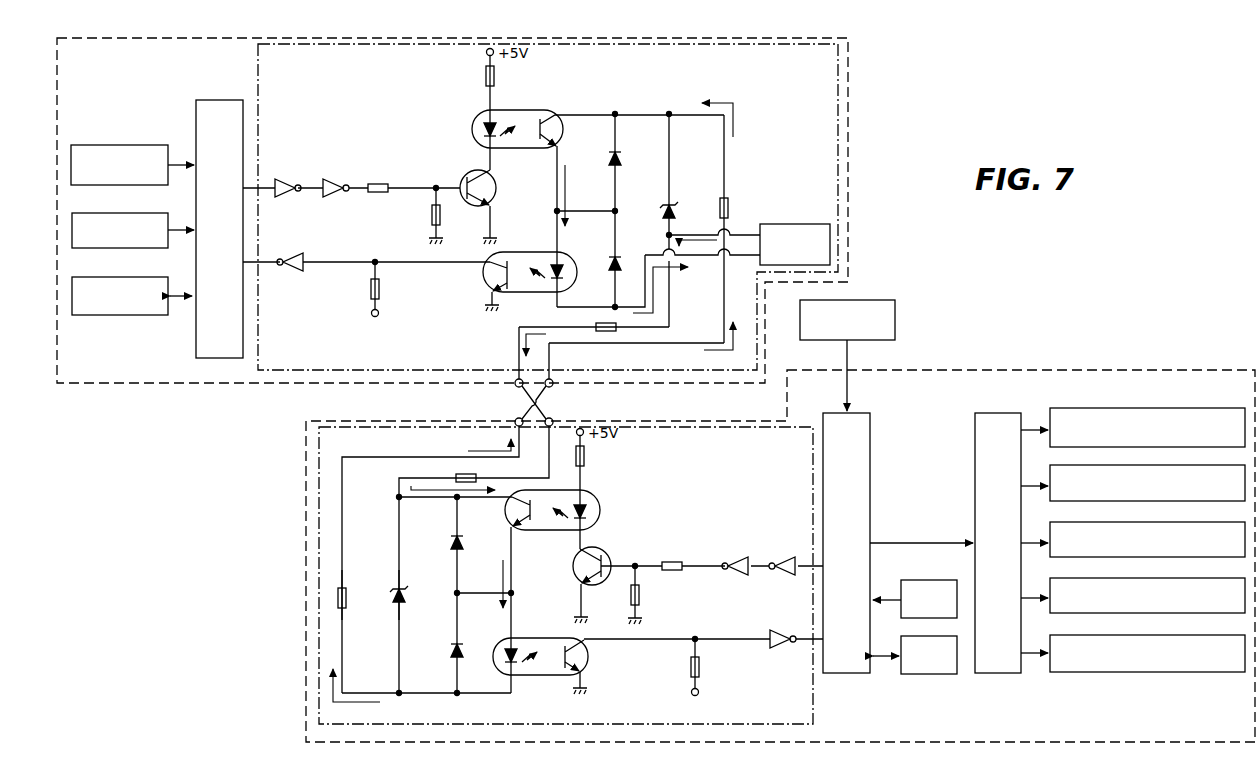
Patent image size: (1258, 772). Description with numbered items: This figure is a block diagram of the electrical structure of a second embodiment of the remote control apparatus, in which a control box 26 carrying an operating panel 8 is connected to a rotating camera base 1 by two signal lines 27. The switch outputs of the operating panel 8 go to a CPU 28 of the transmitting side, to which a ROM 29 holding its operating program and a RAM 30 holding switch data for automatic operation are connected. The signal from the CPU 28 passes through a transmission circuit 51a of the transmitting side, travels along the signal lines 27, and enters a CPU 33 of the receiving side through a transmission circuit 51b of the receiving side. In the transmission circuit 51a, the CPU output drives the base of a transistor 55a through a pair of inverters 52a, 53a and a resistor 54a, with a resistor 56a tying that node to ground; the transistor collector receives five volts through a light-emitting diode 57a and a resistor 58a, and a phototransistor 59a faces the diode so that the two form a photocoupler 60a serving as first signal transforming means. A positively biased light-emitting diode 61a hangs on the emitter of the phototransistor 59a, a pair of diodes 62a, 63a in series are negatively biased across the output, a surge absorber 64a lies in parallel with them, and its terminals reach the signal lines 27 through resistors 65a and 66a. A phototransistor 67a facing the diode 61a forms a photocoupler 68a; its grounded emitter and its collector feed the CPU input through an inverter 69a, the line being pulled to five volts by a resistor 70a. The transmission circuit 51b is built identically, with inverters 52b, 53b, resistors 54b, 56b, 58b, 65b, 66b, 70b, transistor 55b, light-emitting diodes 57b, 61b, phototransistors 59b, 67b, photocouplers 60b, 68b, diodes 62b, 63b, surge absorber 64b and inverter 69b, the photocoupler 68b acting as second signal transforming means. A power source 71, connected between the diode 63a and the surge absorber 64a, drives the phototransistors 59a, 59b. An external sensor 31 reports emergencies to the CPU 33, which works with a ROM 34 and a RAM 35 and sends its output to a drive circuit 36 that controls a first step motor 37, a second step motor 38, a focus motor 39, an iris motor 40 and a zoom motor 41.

The rotating camera base 1 is at (1007, 368).
The operating panel 8 is at (150, 147).
The control box 26 is at (850, 68).
The signal lines 27 is at (555, 401).
The CPU of the transmitting side 28 is at (218, 100).
The ROM 29 is at (139, 206).
The RAM 30 is at (139, 270).
The external sensor 31 is at (872, 300).
The CPU of the receiving side 33 is at (823, 413).
The ROM 34 is at (901, 580).
The RAM 35 is at (901, 636).
The drive circuit 36 is at (976, 413).
The first step motor 37 is at (1050, 410).
The second step motor 38 is at (1051, 467).
The motor for adjusting the focus 39 is at (1051, 524).
The motor for adjusting the iris 40 is at (1051, 581).
The motor for adjusting the zooming operation 41 is at (1051, 639).
The transmission circuit of the transmitting side 51a is at (840, 145).
The transmission circuit of the receiving side 51b is at (319, 520).
The inverter 52a is at (284, 179).
The inverter 52b is at (787, 559).
The inverter 53a is at (332, 179).
The inverter 53b is at (736, 559).
The resistor 54a is at (387, 184).
The resistor 54b is at (679, 562).
The transistor 55a is at (463, 176).
The transistor 55b is at (615, 552).
The resistor 56a is at (432, 215).
The resistor 56b is at (639, 595).
The light-emitting diode 57a is at (484, 123).
The light-emitting diode 57b is at (590, 512).
The resistor 58a is at (494, 76).
The resistor 58b is at (584, 458).
The phototransistor 59a is at (565, 115).
The phototransistor 59b is at (511, 520).
The photocoupler 60a is at (585, 118).
The photocoupler 60b is at (551, 541).
The light-emitting diode 61a is at (563, 263).
The light-emitting diode 61b is at (502, 647).
The diode 62a is at (622, 157).
The diode 62b is at (451, 543).
The diode 63a is at (622, 261).
The diode 63b is at (451, 652).
The surge absorber 64a is at (672, 205).
The surge absorber 64b is at (395, 590).
The resistor 65a is at (730, 205).
The resistor 65b is at (346, 606).
The resistor 66a is at (606, 332).
The resistor 66b is at (460, 474).
The phototransistor 67a is at (497, 296).
The phototransistor 67b is at (566, 676).
The photocoupler 68a is at (540, 272).
The photocoupler 68b is at (528, 650).
The inverter 69a is at (290, 255).
The inverter 69b is at (781, 632).
The resistor 70a is at (371, 290).
The resistor 70b is at (691, 669).
The power source 71 is at (808, 224).